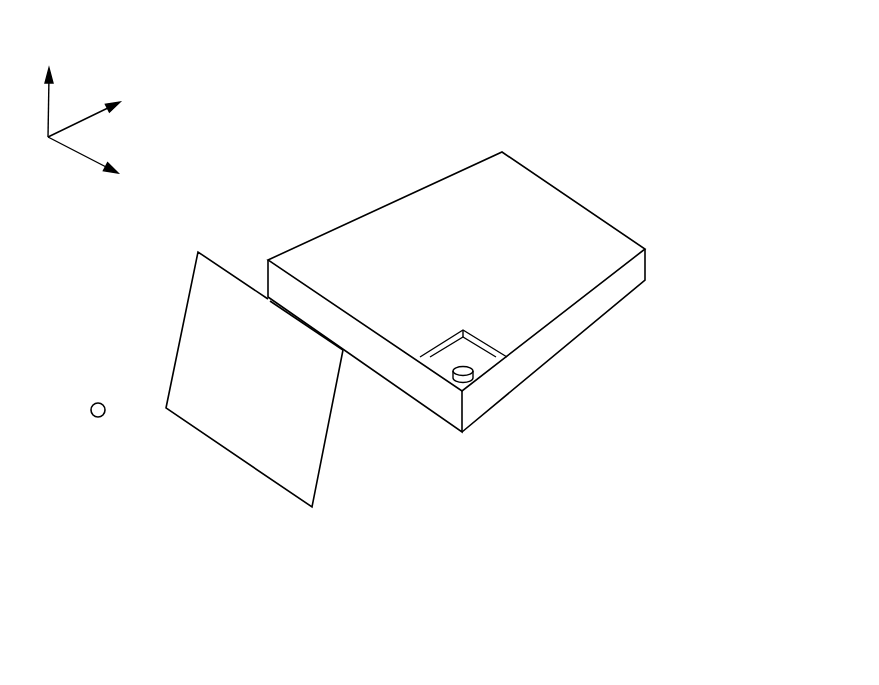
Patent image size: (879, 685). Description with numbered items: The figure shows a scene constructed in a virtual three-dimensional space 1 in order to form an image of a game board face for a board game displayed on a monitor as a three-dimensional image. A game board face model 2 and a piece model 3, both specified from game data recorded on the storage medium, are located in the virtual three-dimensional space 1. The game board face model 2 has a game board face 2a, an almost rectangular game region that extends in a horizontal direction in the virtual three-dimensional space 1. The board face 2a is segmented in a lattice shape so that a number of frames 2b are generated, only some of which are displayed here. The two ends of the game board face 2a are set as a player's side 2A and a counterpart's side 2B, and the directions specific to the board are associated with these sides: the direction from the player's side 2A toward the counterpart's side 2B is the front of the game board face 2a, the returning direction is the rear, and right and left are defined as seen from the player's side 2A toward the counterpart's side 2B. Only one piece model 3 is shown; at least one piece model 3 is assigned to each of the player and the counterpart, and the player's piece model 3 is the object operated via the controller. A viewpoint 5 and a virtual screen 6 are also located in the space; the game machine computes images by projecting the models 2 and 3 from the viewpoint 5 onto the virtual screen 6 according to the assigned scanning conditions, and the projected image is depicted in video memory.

The virtual three-dimensional space 1 is at (358, 40).
The game board face model 2 is at (363, 212).
The game board face 2a is at (420, 248).
The player's side 2A is at (308, 264).
The counterpart's side 2B is at (541, 178).
The frame 2b is at (488, 348).
The piece model 3 is at (463, 360).
The viewpoint 5 is at (92, 402).
The virtual screen 6 is at (183, 310).